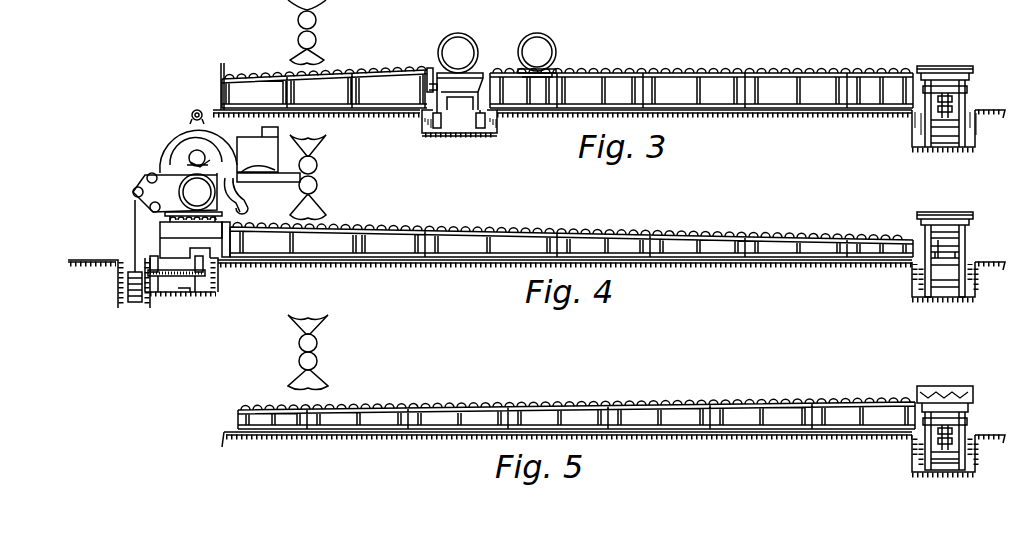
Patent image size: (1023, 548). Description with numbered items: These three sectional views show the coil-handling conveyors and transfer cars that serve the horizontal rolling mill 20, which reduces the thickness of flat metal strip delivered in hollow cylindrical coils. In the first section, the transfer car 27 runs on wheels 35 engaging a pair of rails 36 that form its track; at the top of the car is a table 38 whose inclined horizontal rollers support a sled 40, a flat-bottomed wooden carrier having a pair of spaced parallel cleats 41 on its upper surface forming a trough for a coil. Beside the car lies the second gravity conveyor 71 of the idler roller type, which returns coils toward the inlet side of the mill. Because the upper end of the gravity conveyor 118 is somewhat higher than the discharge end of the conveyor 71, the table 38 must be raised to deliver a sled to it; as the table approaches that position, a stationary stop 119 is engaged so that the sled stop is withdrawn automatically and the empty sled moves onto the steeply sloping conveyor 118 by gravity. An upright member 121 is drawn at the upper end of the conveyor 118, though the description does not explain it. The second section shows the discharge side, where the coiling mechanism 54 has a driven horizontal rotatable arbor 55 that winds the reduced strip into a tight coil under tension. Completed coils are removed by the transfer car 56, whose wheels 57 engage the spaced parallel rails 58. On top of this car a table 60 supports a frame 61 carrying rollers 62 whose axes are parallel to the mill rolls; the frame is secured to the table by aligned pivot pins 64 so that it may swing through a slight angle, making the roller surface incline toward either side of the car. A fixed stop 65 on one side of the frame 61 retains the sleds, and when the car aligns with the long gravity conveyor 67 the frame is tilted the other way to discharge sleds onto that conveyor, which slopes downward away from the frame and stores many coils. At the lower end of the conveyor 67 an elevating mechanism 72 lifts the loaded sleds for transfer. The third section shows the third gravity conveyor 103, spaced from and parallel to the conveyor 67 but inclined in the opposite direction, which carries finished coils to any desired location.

In FIG. 3, the horizontal rolling mill 20 is at (316, 39).
In FIG. 4, the horizontal rolling mill 20 is at (318, 186).
In FIG. 5, the horizontal rolling mill 20 is at (318, 361).
In FIG. 3, the guide post 121 is at (219, 74).
In FIG. 3, the gravity conveyor 118 is at (246, 73).
In FIG. 3, the stationary stop 119 is at (431, 66).
In FIG. 3, the cleats 41 is at (480, 72).
In FIG. 4, the cleats 41 is at (222, 208).
In FIG. 3, the sled 40 is at (484, 74).
In FIG. 4, the sled 40 is at (226, 213).
In FIG. 3, the table 38 is at (476, 76).
In FIG. 3, the car 27 is at (440, 97).
In FIG. 3, the wheels 35 is at (432, 120).
In FIG. 3, the rails 36 is at (468, 134).
In FIG. 3, the second gravity conveyor 71 is at (772, 70).
In FIG. 4, the coiling mechanism 54 is at (185, 167).
In FIG. 4, the rotatable arbor 55 is at (185, 193).
In FIG. 4, the fixed stop 65 is at (168, 222).
In FIG. 4, the frame 61 is at (168, 232).
In FIG. 4, the table 60 is at (165, 244).
In FIG. 4, the transfer car 56 is at (165, 248).
In FIG. 4, the wheels 57 is at (150, 260).
In FIG. 4, the rails 58 is at (205, 277).
In FIG. 4, the rollers 62 is at (237, 246).
In FIG. 4, the pivot pins 64 is at (195, 240).
In FIG. 4, the gravity conveyor 67 is at (523, 228).
In FIG. 4, the elevating mechanism 72 is at (965, 240).
In FIG. 5, the third gravity conveyor 103 is at (675, 400).